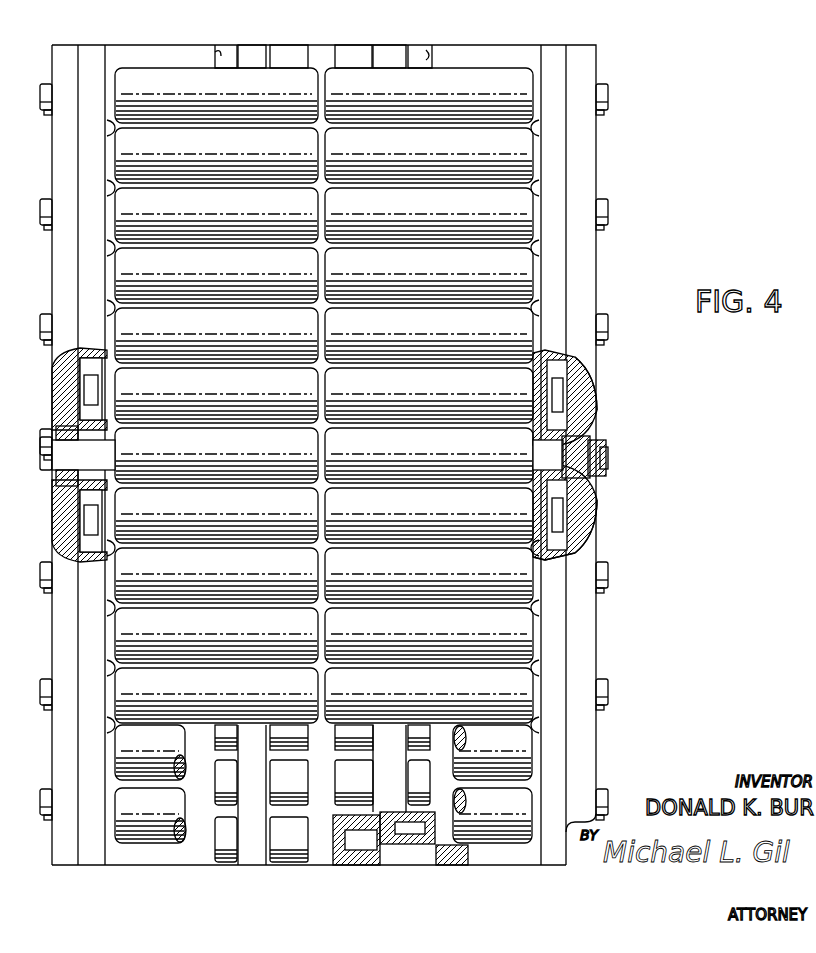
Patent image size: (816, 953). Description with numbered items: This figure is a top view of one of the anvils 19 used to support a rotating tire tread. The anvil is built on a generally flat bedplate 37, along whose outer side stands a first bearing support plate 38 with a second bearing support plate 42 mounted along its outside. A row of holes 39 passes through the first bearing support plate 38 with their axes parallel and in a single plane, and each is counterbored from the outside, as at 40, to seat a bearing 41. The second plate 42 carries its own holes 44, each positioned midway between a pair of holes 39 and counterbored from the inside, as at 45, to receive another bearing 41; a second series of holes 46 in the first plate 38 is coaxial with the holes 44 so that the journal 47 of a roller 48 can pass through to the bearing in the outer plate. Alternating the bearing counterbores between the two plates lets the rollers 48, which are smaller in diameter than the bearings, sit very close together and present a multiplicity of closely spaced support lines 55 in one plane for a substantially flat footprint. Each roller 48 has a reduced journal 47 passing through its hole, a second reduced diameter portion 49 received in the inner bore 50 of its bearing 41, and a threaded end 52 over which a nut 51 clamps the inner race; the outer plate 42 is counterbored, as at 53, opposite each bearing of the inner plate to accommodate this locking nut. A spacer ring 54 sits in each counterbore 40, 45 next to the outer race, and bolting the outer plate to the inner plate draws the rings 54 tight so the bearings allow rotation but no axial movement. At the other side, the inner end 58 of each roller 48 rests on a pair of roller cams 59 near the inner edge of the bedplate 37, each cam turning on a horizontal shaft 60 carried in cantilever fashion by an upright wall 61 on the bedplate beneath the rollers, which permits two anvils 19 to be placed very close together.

The anvil 19 is at (88, 868).
The bedplate 37 is at (178, 852).
The first bearing support plate 38 is at (95, 50).
The holes 39 is at (540, 400).
The counterbore 40 is at (560, 330).
The bearing 41 is at (545, 350).
The second bearing support plate 42 is at (585, 635).
The holes 44 is at (605, 472).
The counterbore 45 is at (590, 422).
The second series of holes 46 is at (505, 405).
The journal 47 is at (540, 490).
The roller 48 is at (130, 140).
The second reduced diameter portion 49 is at (590, 500).
The inner bore 50 is at (606, 442).
The nut 51 is at (48, 300).
The threaded end 52 is at (605, 452).
The counterbore 53 is at (585, 530).
The spacer ring 54 is at (560, 455).
The support lines 55 is at (495, 695).
The inner end 58 is at (322, 212).
The roller cams 59 is at (310, 898).
The horizontal shaft 60 is at (398, 843).
The upright wall 61 is at (252, 858).